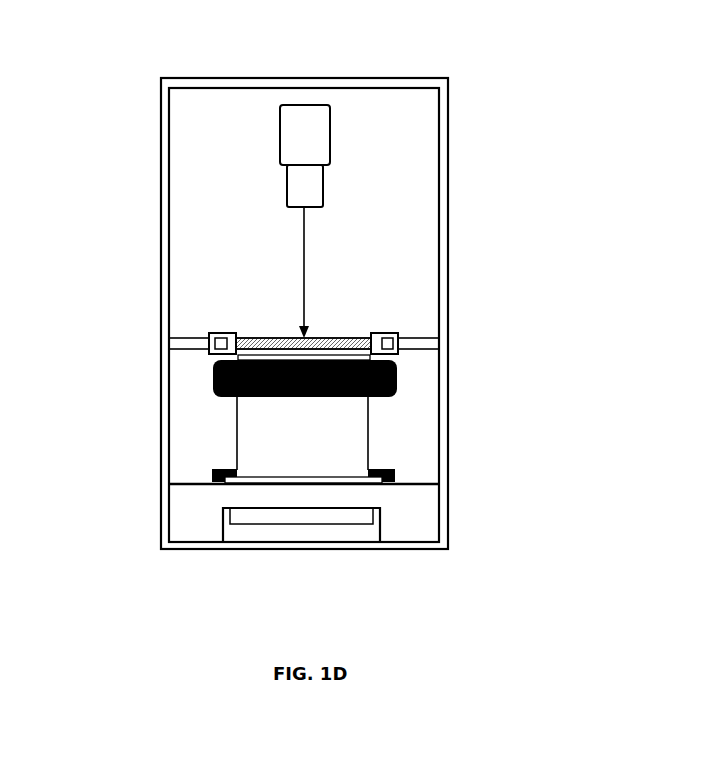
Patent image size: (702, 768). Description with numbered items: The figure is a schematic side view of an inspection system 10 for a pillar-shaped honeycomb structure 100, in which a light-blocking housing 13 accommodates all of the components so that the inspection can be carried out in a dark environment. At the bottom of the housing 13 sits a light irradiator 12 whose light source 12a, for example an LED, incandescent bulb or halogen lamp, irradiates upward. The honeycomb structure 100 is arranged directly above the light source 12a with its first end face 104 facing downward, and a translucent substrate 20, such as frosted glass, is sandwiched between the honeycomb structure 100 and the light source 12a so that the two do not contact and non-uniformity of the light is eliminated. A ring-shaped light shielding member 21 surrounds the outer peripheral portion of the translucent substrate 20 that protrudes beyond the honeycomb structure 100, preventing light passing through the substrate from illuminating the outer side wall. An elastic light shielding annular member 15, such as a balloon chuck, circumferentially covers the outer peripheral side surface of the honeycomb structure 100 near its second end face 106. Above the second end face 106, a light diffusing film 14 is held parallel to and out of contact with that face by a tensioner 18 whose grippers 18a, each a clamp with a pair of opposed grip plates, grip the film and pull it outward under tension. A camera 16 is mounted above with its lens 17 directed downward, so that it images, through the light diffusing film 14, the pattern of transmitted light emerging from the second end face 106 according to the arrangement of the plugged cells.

The inspection system 10 is at (226, 70).
The housing 13 is at (448, 189).
The camera 16 is at (303, 137).
The lens 17 is at (287, 202).
The tensioner 18 is at (398, 343).
The light diffusing film 14 is at (340, 338).
The gripper 18a is at (220, 332).
The second end face 106 is at (280, 355).
The light shielding annular member 15 is at (397, 387).
The pillar-shaped honeycomb structure 100 is at (353, 443).
The light shielding member 21 is at (213, 473).
The first end face 104 is at (267, 477).
The translucent substrate 20 is at (340, 485).
The light irradiator 12 is at (380, 525).
The light source 12a is at (295, 524).